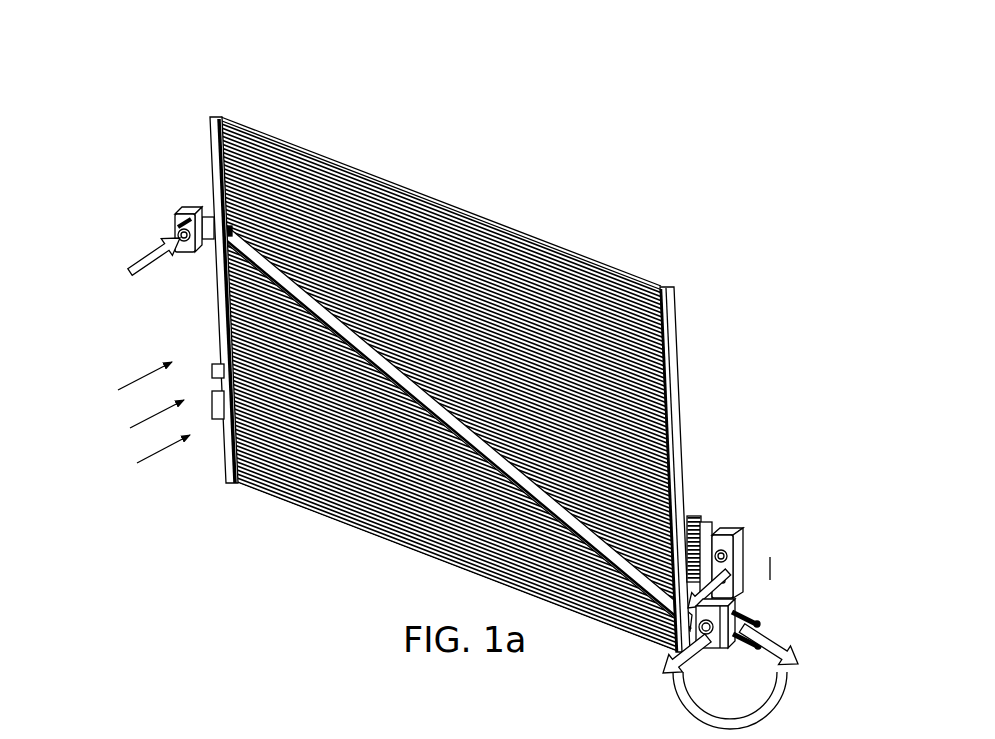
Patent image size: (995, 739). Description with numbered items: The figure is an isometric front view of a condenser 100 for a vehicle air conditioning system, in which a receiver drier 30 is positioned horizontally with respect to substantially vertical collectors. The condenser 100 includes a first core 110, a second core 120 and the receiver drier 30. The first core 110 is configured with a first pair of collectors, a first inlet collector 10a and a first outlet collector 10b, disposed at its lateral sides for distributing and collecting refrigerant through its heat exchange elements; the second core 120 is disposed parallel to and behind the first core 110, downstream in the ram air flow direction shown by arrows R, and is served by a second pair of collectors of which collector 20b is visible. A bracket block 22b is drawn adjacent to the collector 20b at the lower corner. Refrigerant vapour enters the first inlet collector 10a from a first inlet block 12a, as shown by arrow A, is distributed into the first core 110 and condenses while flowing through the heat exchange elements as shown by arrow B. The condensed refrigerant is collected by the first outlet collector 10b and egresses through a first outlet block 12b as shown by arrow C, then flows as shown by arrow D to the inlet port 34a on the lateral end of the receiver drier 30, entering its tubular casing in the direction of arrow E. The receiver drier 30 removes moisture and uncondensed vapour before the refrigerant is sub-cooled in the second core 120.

The condenser 100 is at (730, 236).
The first inlet collector 10a is at (210, 157).
The first outlet collector 10b is at (678, 318).
The first core 110 is at (372, 255).
The second core 120 is at (698, 515).
The first inlet block 12a is at (190, 206).
The first outlet block 12b is at (733, 604).
The second collector 20b is at (703, 522).
The bracket block 22b is at (737, 551).
The receiver drier 30 is at (744, 615).
The inlet port 34a is at (732, 642).
The arrow A is at (141, 269).
The arrow B is at (457, 428).
The arrow C is at (674, 657).
The arrow D is at (730, 705).
The arrow E is at (768, 656).
The arrows R is at (146, 412).